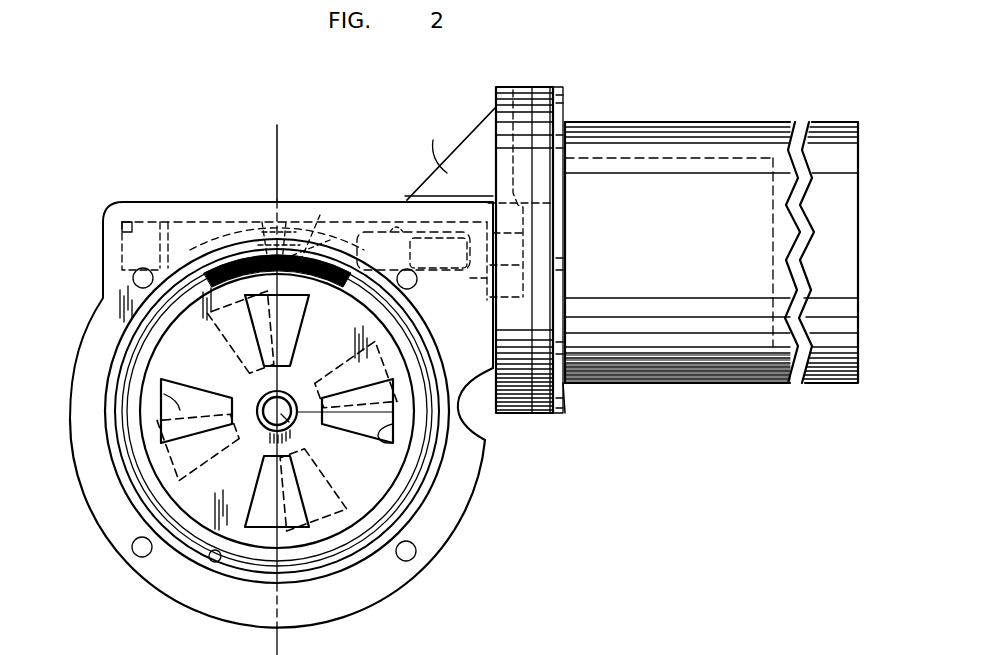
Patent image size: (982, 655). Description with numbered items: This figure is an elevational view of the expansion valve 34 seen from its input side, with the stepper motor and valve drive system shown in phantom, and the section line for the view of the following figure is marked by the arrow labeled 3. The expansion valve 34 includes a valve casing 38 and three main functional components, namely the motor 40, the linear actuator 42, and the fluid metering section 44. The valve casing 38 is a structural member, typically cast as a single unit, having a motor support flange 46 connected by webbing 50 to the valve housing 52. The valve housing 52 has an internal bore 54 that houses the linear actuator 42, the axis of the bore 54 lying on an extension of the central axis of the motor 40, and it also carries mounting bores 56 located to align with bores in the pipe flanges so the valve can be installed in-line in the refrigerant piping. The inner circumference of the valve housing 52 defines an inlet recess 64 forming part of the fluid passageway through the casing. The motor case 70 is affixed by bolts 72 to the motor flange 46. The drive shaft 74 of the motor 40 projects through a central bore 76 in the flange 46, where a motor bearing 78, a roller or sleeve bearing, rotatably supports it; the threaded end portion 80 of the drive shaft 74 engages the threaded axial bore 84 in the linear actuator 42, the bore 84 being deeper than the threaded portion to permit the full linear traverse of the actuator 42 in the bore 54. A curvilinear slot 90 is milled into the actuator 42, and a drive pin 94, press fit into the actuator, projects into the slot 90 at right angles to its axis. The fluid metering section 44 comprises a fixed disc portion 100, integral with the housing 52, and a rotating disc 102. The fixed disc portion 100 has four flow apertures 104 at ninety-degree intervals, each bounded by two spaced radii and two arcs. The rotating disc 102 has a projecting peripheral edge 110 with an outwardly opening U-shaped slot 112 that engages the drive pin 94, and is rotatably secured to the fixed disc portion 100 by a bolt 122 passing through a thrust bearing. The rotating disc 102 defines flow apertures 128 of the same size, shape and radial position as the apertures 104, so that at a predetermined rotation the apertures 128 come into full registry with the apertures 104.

The section line for FIG. 3 is at (268, 140).
The expansion valve 34 is at (423, 153).
The valve casing 38 is at (460, 292).
The motor 40 is at (682, 167).
The linear actuator 42 is at (336, 222).
The fluid metering section 44 is at (228, 378).
The motor support flange 46 is at (490, 428).
The webbing 50 is at (432, 142).
The valve housing 52 is at (443, 512).
The internal bore 54 is at (112, 232).
The mounting bores 56 is at (131, 552).
The inlet recess 64 is at (222, 556).
The motor case 70 is at (832, 388).
The bolts 72 is at (600, 400).
The drive shaft 74 is at (503, 245).
The central bore 76 is at (517, 88).
The motor bearing 78 is at (530, 283).
The end portion of drive shaft 80 is at (410, 195).
The threaded axial bore 84 is at (413, 276).
The curvilinear slot 90 is at (236, 225).
The drive pin 94 is at (262, 222).
The fixed disc portion 100 is at (290, 325).
The rotating disc 102 is at (173, 497).
The flow apertures 104 is at (233, 332).
The projecting peripheral edge 110 is at (320, 215).
The U-shaped slot 112 is at (286, 222).
The bolt 122 is at (297, 433).
The flow apertures 128 is at (185, 412).